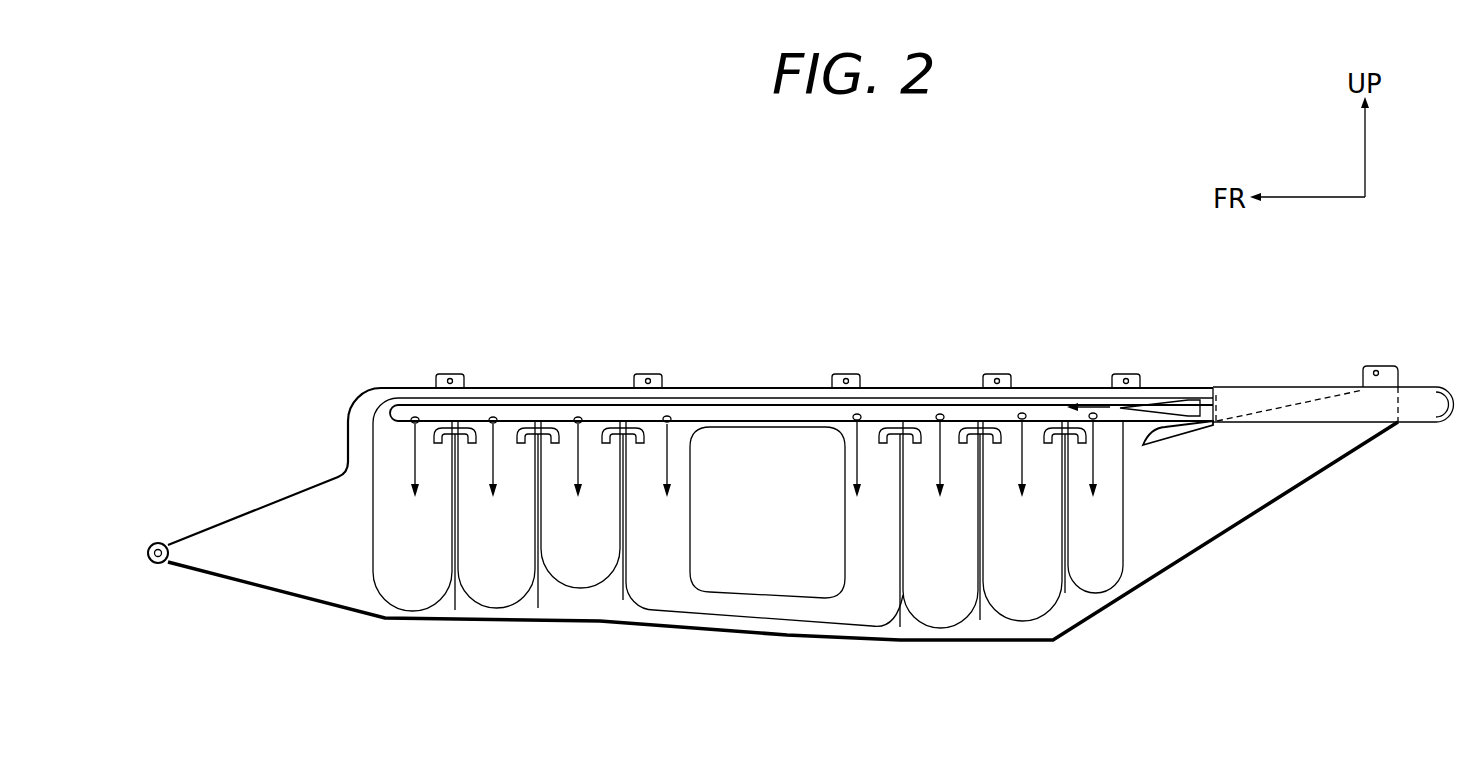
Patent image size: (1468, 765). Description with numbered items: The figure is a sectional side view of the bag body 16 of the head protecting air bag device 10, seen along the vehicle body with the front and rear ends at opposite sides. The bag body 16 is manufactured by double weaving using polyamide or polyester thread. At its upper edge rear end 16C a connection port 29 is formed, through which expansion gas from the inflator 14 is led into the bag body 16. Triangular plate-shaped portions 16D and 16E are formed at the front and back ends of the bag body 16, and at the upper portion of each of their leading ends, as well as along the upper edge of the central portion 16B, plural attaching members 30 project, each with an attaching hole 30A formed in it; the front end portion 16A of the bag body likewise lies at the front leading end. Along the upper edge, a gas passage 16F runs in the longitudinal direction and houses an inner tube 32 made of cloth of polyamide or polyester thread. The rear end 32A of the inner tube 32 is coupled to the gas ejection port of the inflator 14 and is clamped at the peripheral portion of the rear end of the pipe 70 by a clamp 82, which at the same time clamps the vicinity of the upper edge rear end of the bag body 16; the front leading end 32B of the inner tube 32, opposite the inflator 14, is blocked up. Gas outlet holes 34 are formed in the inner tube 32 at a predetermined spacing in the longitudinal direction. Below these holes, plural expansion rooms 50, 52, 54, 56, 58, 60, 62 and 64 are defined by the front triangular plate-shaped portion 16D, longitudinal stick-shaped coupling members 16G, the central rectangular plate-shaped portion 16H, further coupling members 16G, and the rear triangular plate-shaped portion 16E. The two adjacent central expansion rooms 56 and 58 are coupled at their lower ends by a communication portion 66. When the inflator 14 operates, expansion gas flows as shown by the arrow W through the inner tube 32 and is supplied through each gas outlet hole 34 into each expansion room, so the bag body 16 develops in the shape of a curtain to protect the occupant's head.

The head protecting air bag device 10 is at (1331, 378).
The inflator 14 is at (1415, 425).
The bag body 16 is at (792, 642).
The front end portion of inner panel 16A is at (162, 565).
The central portion 16B is at (800, 405).
The upper edge rear end 16C is at (1213, 390).
The front triangular plate-shaped portion 16D is at (275, 580).
The rear triangular plate-shaped portion 16E is at (1278, 498).
The gas passage 16F is at (800, 388).
The longitudinal stick-shaped coupling members 16G is at (456, 447).
The central rectangular plate-shaped portion 16H is at (730, 575).
The connection port 29 is at (1213, 403).
The attaching members 30 is at (152, 543).
The attaching holes 30A is at (170, 553).
The inner tube 32 is at (825, 425).
The rear end of inner tube 32A is at (1215, 400).
The front leading end of inner tube 32B is at (395, 400).
The gas outlet holes 34 is at (414, 425).
The expansion room 50 is at (420, 612).
The expansion room 52 is at (500, 612).
The expansion room 54 is at (585, 595).
The expansion room 56 is at (660, 604).
The expansion room 58 is at (878, 612).
The expansion room 60 is at (944, 627).
The expansion room 62 is at (1025, 618).
The expansion room 64 is at (1100, 585).
The communication portion 66 is at (832, 616).
The pipe 70 is at (1150, 440).
The clamp 82 is at (1200, 408).
The arrow indicating expansion gas flow W is at (417, 495).